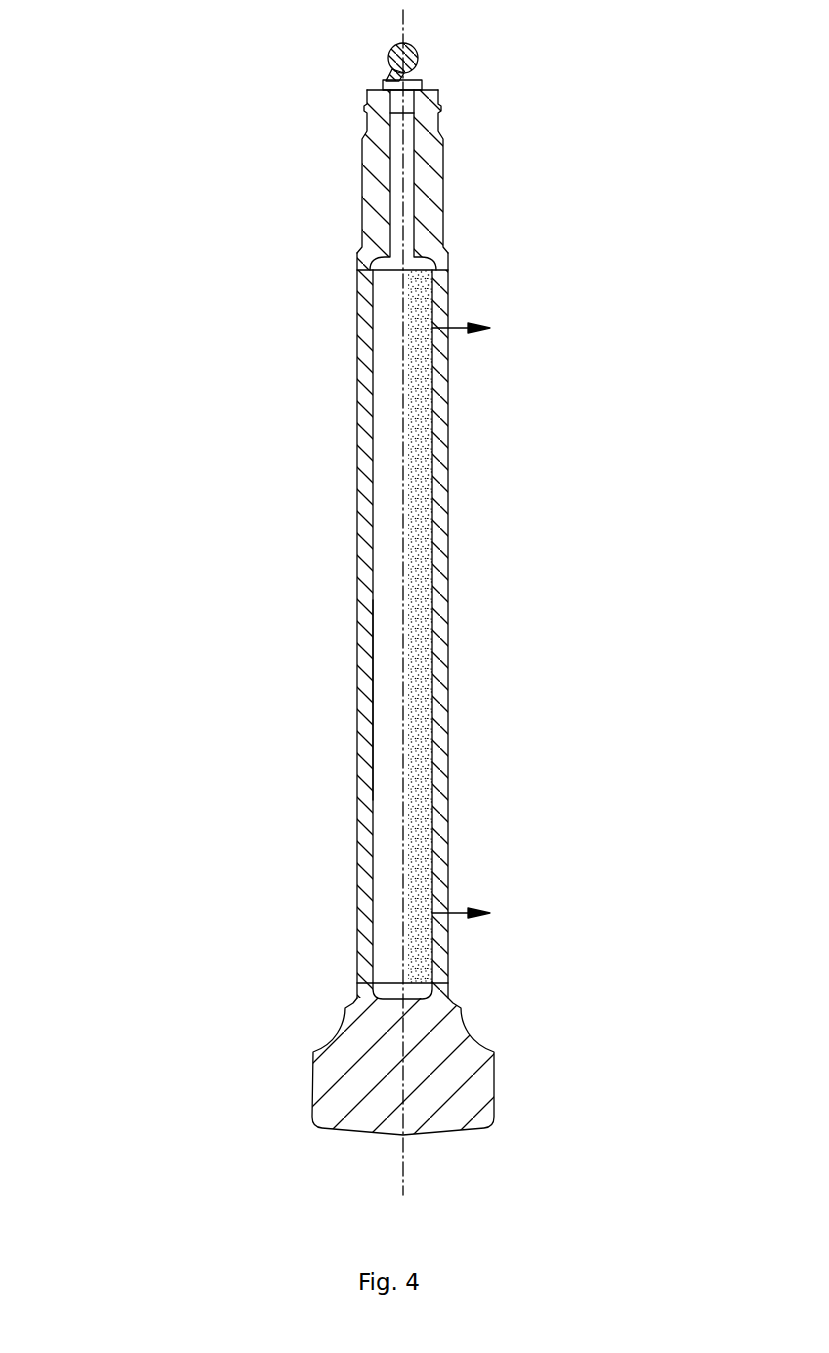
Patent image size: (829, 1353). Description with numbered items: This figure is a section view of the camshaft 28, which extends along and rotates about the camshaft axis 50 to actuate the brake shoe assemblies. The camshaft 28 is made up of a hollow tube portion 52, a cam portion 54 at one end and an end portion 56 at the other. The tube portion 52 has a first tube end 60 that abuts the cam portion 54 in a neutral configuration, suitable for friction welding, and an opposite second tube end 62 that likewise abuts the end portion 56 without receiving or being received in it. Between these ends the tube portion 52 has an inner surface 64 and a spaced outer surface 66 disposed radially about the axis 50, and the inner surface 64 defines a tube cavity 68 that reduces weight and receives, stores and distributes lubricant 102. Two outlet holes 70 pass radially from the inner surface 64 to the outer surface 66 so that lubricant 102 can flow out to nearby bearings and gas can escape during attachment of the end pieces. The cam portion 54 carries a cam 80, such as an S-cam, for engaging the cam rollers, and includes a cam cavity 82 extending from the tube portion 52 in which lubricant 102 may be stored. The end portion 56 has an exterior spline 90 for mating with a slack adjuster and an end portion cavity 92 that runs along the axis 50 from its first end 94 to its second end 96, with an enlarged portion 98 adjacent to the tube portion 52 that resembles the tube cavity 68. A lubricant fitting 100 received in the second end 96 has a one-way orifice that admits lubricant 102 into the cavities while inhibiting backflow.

The camshaft 28 is at (125, 883).
The camshaft axis 50 is at (403, 33).
The tube portion 52 is at (363, 878).
The cam portion 54 is at (345, 1130).
The end portion 56 is at (360, 253).
The first tube end 60 is at (450, 1000).
The second tube end 62 is at (432, 272).
The inner surface 64 is at (385, 694).
The outer surface 66 is at (363, 485).
The tube cavity 68 is at (403, 636).
The outlet hole 70 is at (437, 335).
The cam 80 is at (312, 1083).
The cam cavity 82 is at (385, 983).
The spline 90 is at (363, 183).
The end portion cavity 92 is at (389, 117).
The first end 94 is at (357, 292).
The second end 96 is at (432, 88).
The enlarged portion 98 is at (389, 261).
The lubricant fitting 100 is at (388, 55).
The lubricant 102 is at (418, 640).